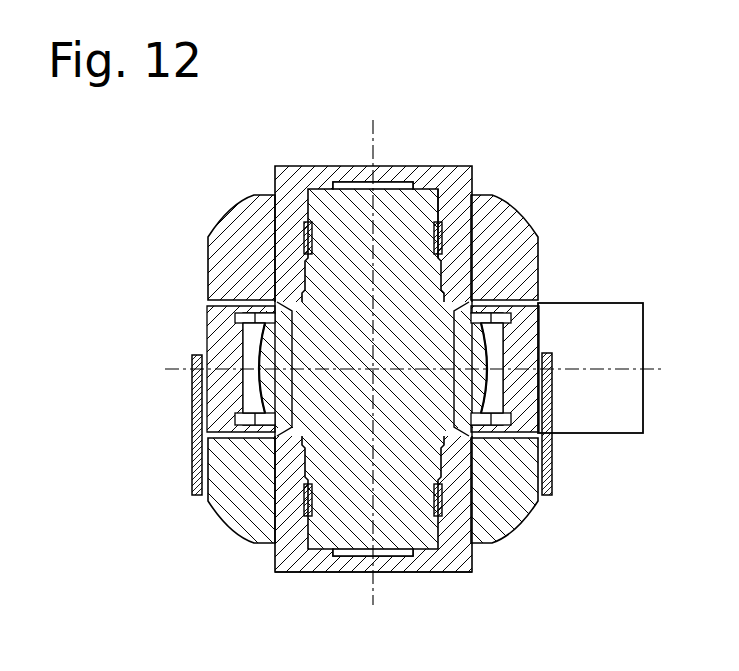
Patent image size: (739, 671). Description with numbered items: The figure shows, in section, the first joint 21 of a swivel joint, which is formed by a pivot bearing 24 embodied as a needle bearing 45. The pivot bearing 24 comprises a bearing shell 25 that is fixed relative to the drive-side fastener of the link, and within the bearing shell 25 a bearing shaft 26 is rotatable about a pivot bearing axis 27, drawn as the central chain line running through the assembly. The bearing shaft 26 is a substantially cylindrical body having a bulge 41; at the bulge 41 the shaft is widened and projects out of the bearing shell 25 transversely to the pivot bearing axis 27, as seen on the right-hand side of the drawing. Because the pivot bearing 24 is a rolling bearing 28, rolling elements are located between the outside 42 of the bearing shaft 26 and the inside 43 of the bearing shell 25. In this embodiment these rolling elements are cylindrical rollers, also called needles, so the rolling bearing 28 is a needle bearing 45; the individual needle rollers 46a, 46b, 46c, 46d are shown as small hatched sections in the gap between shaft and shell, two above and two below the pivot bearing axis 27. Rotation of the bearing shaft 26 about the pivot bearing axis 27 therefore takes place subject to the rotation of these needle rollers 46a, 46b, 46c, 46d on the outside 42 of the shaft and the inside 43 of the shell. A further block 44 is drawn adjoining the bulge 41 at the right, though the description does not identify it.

The first joint 21 is at (445, 148).
The pivot bearing 24 is at (338, 132).
The bearing shell 25 is at (478, 205).
The bearing shaft 26 is at (397, 510).
The pivot bearing axis 27 is at (373, 150).
The rolling bearing 28 is at (248, 566).
The bulge 41 is at (508, 475).
The outside of the bearing shaft 42 is at (335, 185).
The inside of the bearing shell 43 is at (333, 184).
The control unit 44 is at (617, 368).
The needle bearing 45 is at (300, 578).
The needle roller 46a is at (303, 237).
The needle roller 46b is at (443, 240).
The needle roller 46c is at (303, 498).
The needle roller 46d is at (442, 509).